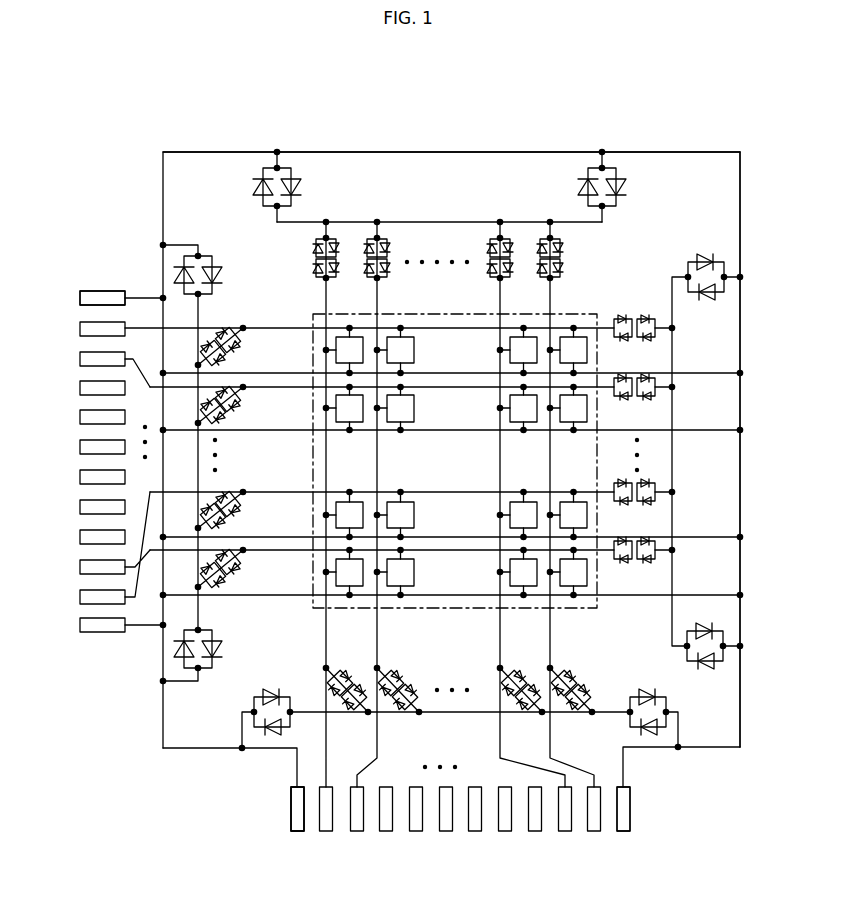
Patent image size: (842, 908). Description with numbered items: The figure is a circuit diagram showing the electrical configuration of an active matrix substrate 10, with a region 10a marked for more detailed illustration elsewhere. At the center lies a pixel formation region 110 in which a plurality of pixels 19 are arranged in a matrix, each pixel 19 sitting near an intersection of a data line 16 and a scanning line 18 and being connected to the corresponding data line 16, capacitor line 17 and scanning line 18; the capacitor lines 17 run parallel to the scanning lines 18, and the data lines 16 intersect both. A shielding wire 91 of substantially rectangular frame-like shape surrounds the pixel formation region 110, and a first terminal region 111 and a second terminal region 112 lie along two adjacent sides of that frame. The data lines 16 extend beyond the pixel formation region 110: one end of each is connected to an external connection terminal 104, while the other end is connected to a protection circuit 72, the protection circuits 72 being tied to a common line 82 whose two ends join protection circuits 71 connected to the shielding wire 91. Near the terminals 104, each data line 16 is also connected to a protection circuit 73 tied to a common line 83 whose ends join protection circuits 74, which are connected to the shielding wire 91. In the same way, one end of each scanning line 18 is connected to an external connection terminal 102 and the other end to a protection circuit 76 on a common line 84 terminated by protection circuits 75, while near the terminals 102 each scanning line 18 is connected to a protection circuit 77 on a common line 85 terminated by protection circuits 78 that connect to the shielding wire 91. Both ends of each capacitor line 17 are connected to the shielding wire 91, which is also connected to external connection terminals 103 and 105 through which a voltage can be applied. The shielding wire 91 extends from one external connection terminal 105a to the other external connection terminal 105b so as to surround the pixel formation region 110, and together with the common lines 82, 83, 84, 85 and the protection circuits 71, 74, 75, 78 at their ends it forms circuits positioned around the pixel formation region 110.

The active matrix substrate 10 is at (706, 150).
The region 10a is at (158, 148).
The data lines 16 is at (328, 300).
The capacitor lines 17 is at (284, 372).
The scanning lines 18 is at (284, 326).
The pixels 19 is at (414, 350).
The protection circuits 71 is at (275, 150).
The protection circuits 72 is at (328, 220).
The protection circuits 73 is at (320, 690).
The protection circuits 74 is at (270, 736).
The protection circuits 75 is at (705, 258).
The protection circuits 76 is at (662, 322).
The protection circuits 77 is at (239, 322).
The protection circuits 78 is at (201, 254).
The common line 82 is at (464, 220).
The common line 83 is at (466, 714).
The common line 84 is at (672, 448).
The common line 85 is at (198, 455).
The shielding wire 91 is at (741, 212).
The external connection terminals 102 is at (70, 605).
The external connection terminals 103 is at (80, 298).
The external connection terminals 104 is at (318, 838).
The external connection terminals 105 is at (465, 829).
The external connection terminal 105a is at (297, 832).
The external connection terminal 105b is at (623, 832).
The pixel formation region 110 is at (597, 520).
The first terminal region 111 is at (97, 287).
The second terminal region 112 is at (287, 806).